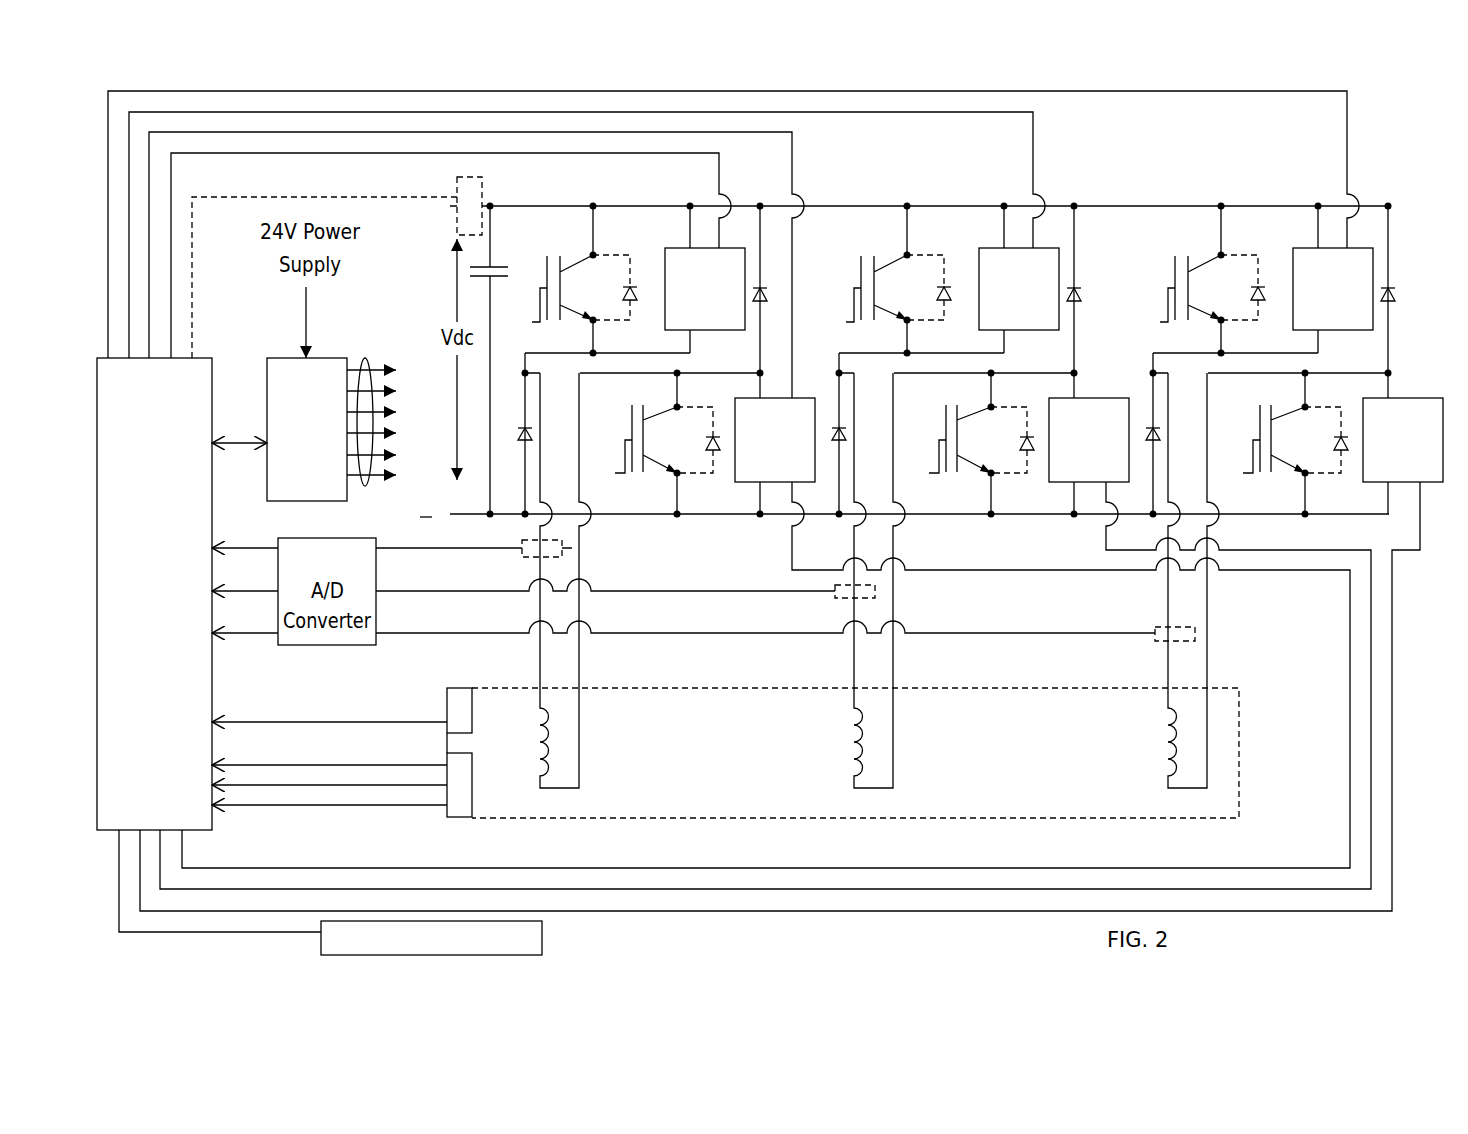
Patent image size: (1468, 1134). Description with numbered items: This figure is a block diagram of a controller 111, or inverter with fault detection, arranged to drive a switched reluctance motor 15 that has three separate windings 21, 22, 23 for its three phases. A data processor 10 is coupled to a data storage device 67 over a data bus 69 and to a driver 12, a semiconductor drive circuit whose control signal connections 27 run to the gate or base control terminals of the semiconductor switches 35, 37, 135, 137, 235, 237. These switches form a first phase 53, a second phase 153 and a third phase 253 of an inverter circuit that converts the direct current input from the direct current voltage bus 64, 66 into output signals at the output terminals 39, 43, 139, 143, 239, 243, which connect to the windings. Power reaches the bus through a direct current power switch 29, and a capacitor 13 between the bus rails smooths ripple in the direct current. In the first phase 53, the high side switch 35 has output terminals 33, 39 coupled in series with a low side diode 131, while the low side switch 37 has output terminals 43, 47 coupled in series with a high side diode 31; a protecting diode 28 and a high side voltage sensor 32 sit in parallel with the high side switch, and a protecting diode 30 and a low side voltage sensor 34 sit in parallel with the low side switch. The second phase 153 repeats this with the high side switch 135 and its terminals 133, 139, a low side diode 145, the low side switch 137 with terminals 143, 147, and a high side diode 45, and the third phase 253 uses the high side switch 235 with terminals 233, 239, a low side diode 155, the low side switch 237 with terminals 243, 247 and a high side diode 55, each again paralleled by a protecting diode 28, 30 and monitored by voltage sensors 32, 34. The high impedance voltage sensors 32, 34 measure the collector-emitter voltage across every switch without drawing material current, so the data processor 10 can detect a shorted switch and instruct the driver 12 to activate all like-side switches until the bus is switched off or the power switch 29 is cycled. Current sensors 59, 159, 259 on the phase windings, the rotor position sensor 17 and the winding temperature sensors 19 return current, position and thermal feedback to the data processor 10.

The data processor 10 is at (205, 358).
The driver 12 is at (330, 358).
The capacitor 13 is at (500, 263).
The switched reluctance motor 15 is at (1010, 689).
The position sensor 17 is at (447, 700).
The winding temperature sensors 19 is at (458, 806).
The motor winding 21 is at (536, 756).
The motor winding 22 is at (846, 744).
The motor winding 23 is at (1157, 744).
The driver control signal lines 27 is at (362, 362).
The protecting diode 28 is at (633, 283).
The direct current power switch 29 is at (457, 185).
The protecting diode 30 is at (715, 455).
The high side diode 31 is at (763, 285).
The high side voltage sensor 32 is at (678, 248).
The output terminal 33 is at (593, 240).
The low side voltage sensor 34 is at (802, 398).
The high side semiconductor switch 35 is at (540, 288).
The low side semiconductor switch 37 is at (625, 440).
The output terminal 39 is at (595, 353).
The output terminal 43 is at (680, 392).
The high side diode 45 is at (1091, 302).
The output terminal 47 is at (676, 492).
The first phase 53 is at (680, 198).
The high side diode 55 is at (1403, 302).
The current sensor 59 is at (572, 548).
The direct current voltage bus 64 is at (1117, 206).
The direct current voltage bus 66 is at (1020, 514).
The data storage device 67 is at (542, 940).
The data bus 69 is at (166, 932).
The controller 111 is at (403, 852).
The low side diode 131 is at (523, 427).
The output terminal 133 is at (875, 265).
The high side semiconductor switch 135 is at (835, 287).
The low side semiconductor switch 137 is at (948, 428).
The output terminal 139 is at (921, 338).
The output terminal 143 is at (984, 385).
The low side diode 145 is at (829, 433).
The output terminal 147 is at (963, 493).
The second phase 153 is at (949, 181).
The low side diode 155 is at (1143, 433).
The current sensor 159 is at (840, 598).
The output terminal 233 is at (1187, 265).
The high side semiconductor switch 235 is at (1148, 293).
The low side semiconductor switch 237 is at (1262, 428).
The output terminal 239 is at (1235, 338).
The output terminal 243 is at (1298, 385).
The output terminal 247 is at (1273, 493).
The third phase 253 is at (1261, 181).
The current sensor 259 is at (1160, 627).